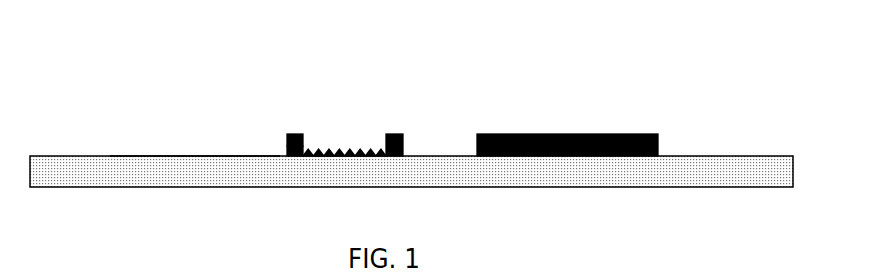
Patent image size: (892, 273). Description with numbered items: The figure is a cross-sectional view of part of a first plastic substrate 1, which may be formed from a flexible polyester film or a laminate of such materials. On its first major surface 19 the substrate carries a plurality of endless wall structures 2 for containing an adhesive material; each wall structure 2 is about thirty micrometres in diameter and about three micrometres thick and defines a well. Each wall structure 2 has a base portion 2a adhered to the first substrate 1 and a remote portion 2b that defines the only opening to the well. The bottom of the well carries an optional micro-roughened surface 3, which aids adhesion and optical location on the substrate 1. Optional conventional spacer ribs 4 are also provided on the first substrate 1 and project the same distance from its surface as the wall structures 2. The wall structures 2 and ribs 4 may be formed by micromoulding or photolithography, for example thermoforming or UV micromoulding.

The first plastic substrate 1 is at (747, 168).
The first major surface 19 is at (105, 148).
The endless wall structures 2 is at (412, 137).
The base portion 2a is at (281, 152).
The remote portion 2b is at (281, 130).
The micro-roughened surface 3 is at (353, 142).
The spacer ribs 4 is at (592, 138).